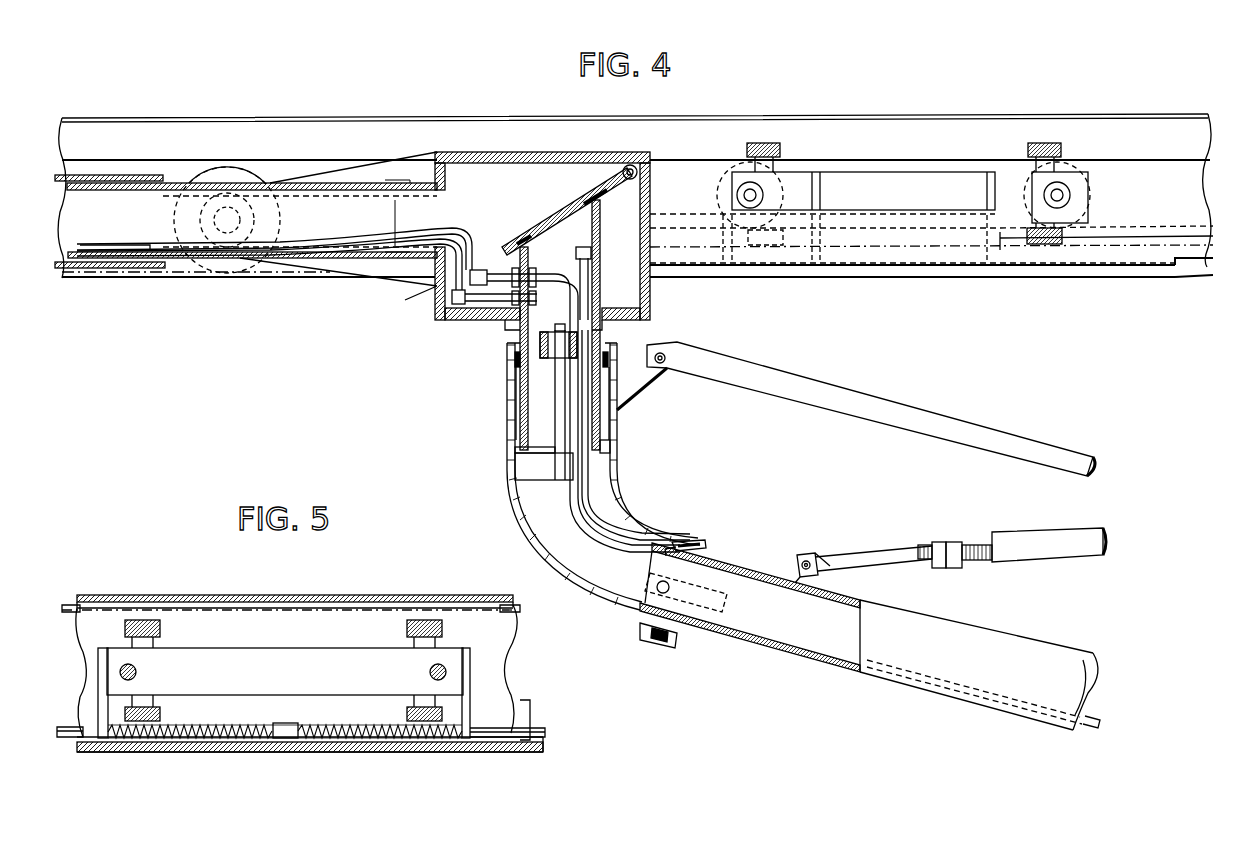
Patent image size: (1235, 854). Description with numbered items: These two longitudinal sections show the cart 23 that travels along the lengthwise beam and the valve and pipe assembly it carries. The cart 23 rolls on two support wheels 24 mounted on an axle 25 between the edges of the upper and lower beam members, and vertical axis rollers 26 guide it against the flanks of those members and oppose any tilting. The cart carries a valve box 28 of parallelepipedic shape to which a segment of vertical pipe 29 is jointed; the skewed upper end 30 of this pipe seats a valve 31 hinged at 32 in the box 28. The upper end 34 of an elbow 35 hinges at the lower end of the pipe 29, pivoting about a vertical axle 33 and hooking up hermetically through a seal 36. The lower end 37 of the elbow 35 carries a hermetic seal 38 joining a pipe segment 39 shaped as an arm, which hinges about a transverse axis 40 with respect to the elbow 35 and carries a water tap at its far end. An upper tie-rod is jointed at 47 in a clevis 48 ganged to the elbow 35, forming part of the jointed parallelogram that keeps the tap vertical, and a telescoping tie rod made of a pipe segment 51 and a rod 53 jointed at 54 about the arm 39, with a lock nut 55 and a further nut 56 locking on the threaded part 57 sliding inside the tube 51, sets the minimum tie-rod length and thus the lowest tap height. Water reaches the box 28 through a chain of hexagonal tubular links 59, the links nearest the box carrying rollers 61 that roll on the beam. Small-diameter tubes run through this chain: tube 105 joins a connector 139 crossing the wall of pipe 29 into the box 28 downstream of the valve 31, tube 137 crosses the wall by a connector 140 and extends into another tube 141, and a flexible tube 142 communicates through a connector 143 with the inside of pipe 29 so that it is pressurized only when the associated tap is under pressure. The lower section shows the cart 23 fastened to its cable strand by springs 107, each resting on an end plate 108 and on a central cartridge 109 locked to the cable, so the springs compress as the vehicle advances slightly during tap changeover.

In FIG. 4, the cart 23 is at (877, 185).
In FIG. 5, the cart 23 is at (265, 667).
In FIG. 4, the support wheel 24 is at (1073, 163).
In FIG. 5, the axle 25 is at (446, 673).
In FIG. 4, the vertical axis roller 26 is at (1033, 150).
In FIG. 5, the vertical axis roller 26 is at (442, 628).
In FIG. 4, the valve box 28 is at (647, 187).
In FIG. 4, the vertical pipe 29 is at (598, 298).
In FIG. 4, the skewed upper end 30 is at (600, 203).
In FIG. 4, the valve 31 is at (563, 215).
In FIG. 4, the hinge 32 is at (628, 165).
In FIG. 4, the vertical axle 33 is at (558, 398).
In FIG. 4, the upper end of elbow 34 is at (614, 443).
In FIG. 4, the elbow 35 is at (653, 517).
In FIG. 4, the seal 36 is at (514, 359).
In FIG. 4, the lower end of elbow 37 is at (690, 541).
In FIG. 4, the hermetic seal 38 is at (705, 546).
In FIG. 4, the pipe segment arm 39 is at (737, 560).
In FIG. 4, the transverse axis 40 is at (657, 597).
In FIG. 4, the joint of upper tie-rod 47 is at (662, 356).
In FIG. 4, the clevis 48 is at (637, 375).
In FIG. 4, the pipe segment of telescoping tie rod 51 is at (1035, 547).
In FIG. 4, the rod 53 is at (862, 557).
In FIG. 4, the joint of rod 54 is at (800, 560).
In FIG. 4, the lock nut 55 is at (954, 548).
In FIG. 4, the lock nut 56 is at (938, 553).
In FIG. 4, the threaded part 57 is at (977, 547).
In FIG. 4, the tubular link 59 is at (137, 178).
In FIG. 4, the roller 61 is at (218, 177).
In FIG. 4, the tube 105 is at (590, 492).
In FIG. 5, the spring 107 is at (203, 740).
In FIG. 5, the end plate 108 is at (103, 727).
In FIG. 5, the central cartridge 109 is at (287, 732).
In FIG. 4, the channel tube 137 is at (575, 503).
In FIG. 4, the connector 139 is at (591, 272).
In FIG. 4, the connector 140 is at (495, 270).
In FIG. 4, the tube 141 is at (465, 227).
In FIG. 4, the flexible tube 142 is at (450, 293).
In FIG. 4, the connector 143 is at (494, 304).